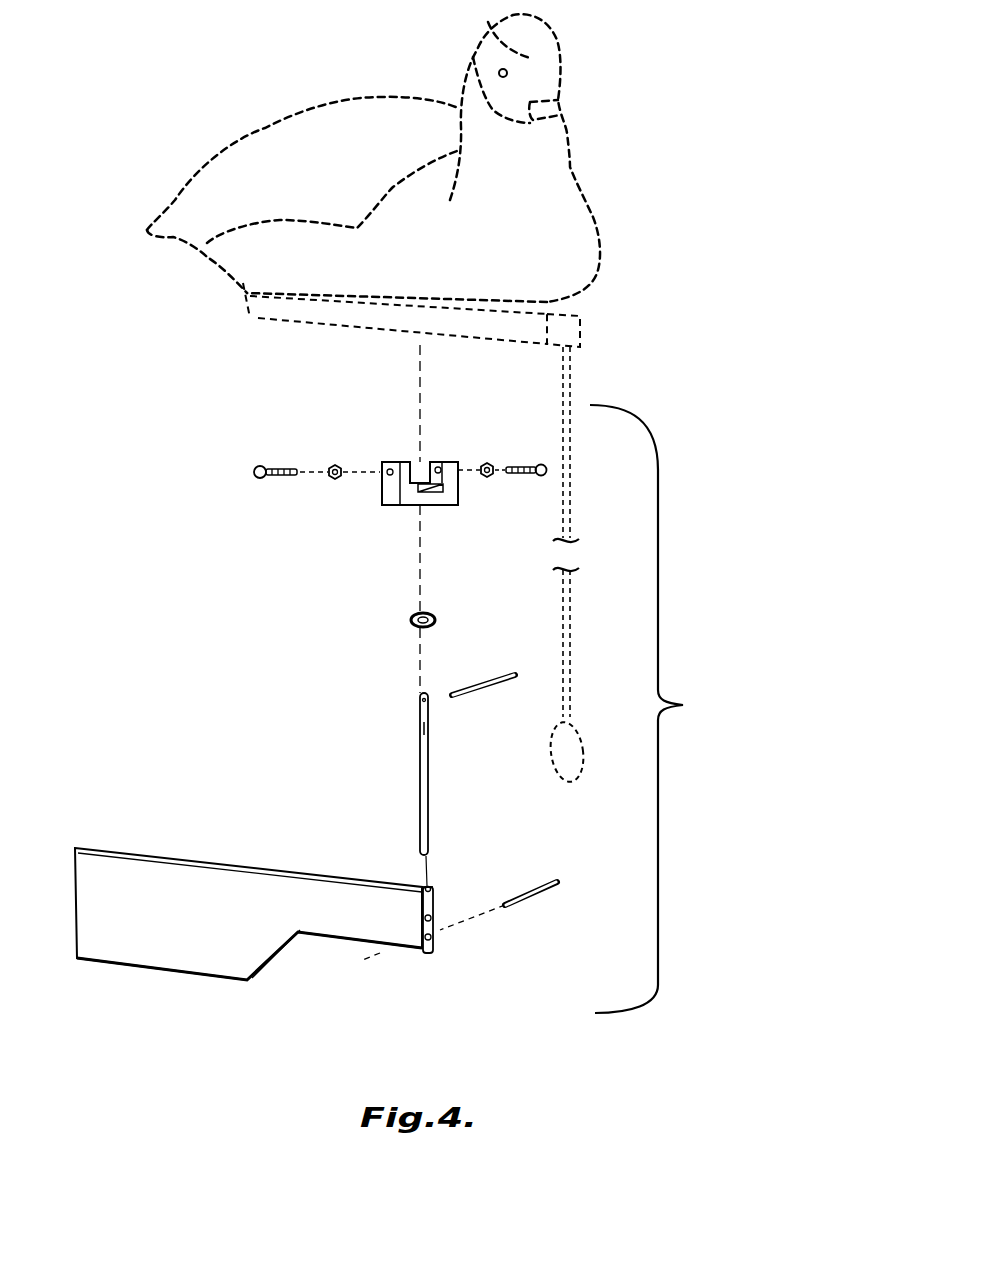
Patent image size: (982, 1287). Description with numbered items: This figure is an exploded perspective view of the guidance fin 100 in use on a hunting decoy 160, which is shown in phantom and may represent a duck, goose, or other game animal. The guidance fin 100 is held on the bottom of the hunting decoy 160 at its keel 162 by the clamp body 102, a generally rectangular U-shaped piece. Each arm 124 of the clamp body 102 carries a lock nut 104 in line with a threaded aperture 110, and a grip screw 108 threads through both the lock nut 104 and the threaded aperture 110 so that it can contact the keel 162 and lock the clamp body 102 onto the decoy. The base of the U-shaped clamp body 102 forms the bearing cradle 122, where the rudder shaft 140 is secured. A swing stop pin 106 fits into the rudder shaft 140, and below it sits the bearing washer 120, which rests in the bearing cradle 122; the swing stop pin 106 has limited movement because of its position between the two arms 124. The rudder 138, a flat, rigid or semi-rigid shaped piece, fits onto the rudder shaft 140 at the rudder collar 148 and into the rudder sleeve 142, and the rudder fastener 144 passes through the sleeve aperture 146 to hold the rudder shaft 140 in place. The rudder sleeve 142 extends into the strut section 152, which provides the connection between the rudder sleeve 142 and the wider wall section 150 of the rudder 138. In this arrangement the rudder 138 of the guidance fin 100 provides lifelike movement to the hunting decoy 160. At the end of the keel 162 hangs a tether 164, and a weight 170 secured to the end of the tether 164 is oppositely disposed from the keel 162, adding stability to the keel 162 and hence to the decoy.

The guidance fin 100 is at (662, 709).
The clamp body 102 is at (373, 503).
The lock nut 104 is at (342, 462).
The swing stop pin 106 is at (480, 680).
The grip screw 108 is at (289, 466).
The threaded aperture 110 is at (435, 460).
The bearing washer 120 is at (412, 624).
The bearing cradle 122 is at (457, 484).
The arm 124 is at (450, 460).
The rudder 138 is at (248, 939).
The rudder shaft 140 is at (428, 790).
The rudder sleeve 142 is at (433, 953).
The rudder fastener 144 is at (537, 903).
The sleeve aperture 146 is at (422, 938).
The rudder collar 148 is at (430, 883).
The wall section 150 is at (163, 897).
The strut section 152 is at (345, 922).
The hunting decoy 160 is at (592, 213).
The keel 162 is at (277, 318).
The tether 164 is at (572, 470).
The weight 170 is at (585, 745).